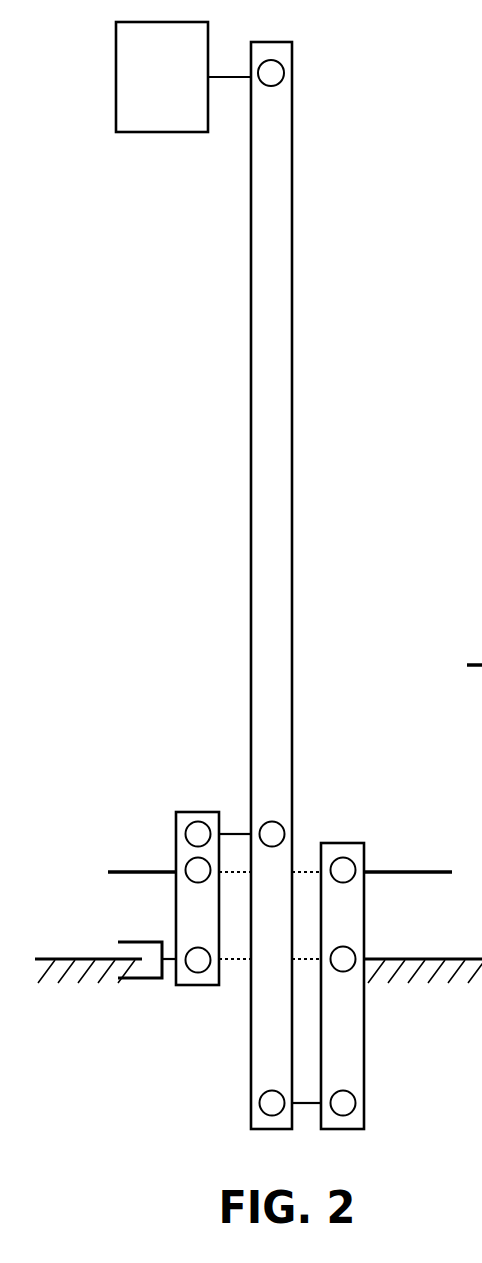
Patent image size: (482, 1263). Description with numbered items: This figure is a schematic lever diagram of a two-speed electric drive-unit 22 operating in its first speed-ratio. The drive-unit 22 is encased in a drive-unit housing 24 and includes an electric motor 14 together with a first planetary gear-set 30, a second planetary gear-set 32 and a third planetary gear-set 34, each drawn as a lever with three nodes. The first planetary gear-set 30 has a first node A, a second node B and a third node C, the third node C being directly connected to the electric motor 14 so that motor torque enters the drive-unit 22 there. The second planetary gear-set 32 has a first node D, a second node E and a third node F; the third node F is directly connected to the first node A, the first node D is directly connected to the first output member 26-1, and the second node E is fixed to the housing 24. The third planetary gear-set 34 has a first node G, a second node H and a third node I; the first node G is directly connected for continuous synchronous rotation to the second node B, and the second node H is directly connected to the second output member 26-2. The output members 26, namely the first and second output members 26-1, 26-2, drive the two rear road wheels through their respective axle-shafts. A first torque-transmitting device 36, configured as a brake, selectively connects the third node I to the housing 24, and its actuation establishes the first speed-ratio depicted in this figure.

The electric drive-unit 22 is at (76, 207).
The electric motor 14 is at (162, 132).
The first planetary gear-set 30 is at (283, 317).
The second planetary gear-set 32 is at (353, 1034).
The third planetary gear-set 34 is at (185, 924).
The drive-unit housing 24 is at (58, 958).
The output member 26 is at (479, 632).
The first output member 26-1 is at (420, 871).
The second output member 26-2 is at (125, 871).
The first torque-transmitting device 36 is at (135, 941).
The first node A is at (268, 1105).
The second node B is at (275, 833).
The third node C is at (277, 75).
The first node D is at (345, 868).
The second node E is at (345, 957).
The third node F is at (348, 1105).
The first node G is at (195, 830).
The second node H is at (192, 868).
The third node I is at (198, 966).